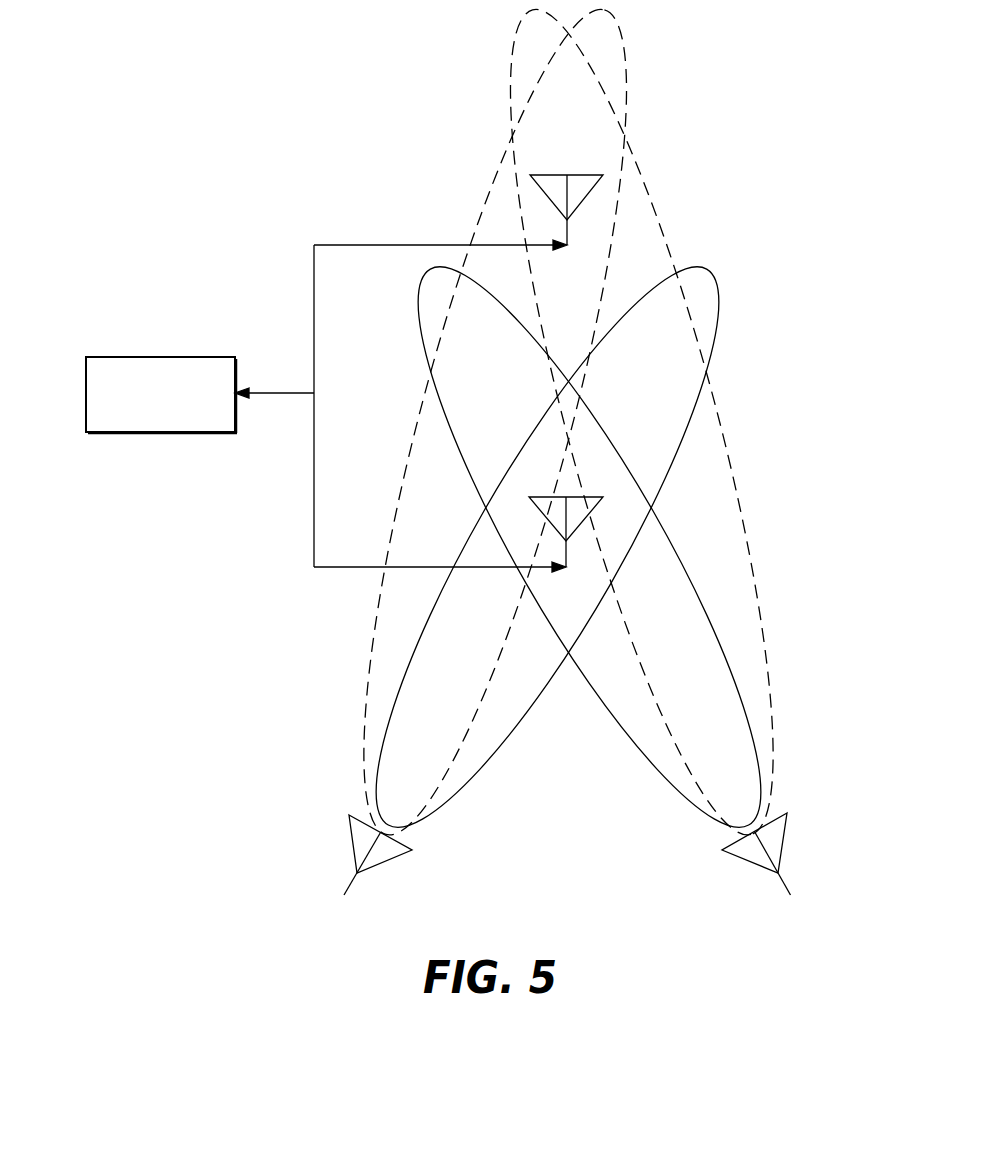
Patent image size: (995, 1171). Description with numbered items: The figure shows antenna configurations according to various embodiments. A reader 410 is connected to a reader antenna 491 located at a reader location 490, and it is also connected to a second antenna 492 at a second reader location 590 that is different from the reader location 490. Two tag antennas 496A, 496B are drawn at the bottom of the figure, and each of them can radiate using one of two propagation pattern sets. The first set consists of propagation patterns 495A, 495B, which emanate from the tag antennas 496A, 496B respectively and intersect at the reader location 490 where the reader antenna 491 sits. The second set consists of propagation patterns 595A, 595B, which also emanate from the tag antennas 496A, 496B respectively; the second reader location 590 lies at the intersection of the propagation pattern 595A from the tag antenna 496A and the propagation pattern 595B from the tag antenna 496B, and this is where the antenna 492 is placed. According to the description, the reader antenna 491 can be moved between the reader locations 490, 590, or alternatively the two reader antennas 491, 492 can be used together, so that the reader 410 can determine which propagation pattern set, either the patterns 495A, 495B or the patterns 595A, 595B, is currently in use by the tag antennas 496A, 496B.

The reader 410 is at (87, 366).
The antenna 492 is at (556, 173).
The reader antenna 491 is at (576, 546).
The reader location 490 is at (778, 504).
The second reader location 590 is at (778, 197).
The propagation pattern 595A is at (378, 607).
The propagation pattern 595B is at (760, 603).
The propagation pattern 495A is at (440, 810).
The propagation pattern 495B is at (701, 812).
The tag antenna 496A is at (350, 843).
The tag antenna 496B is at (783, 840).